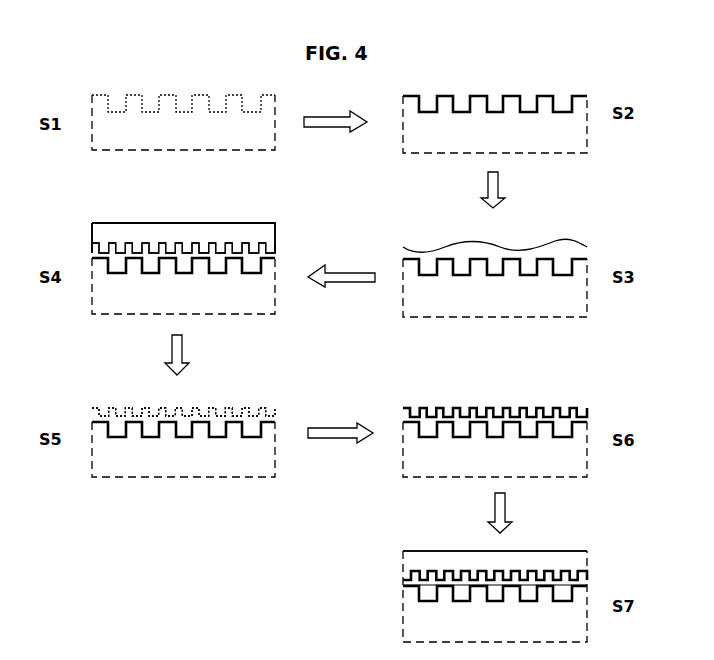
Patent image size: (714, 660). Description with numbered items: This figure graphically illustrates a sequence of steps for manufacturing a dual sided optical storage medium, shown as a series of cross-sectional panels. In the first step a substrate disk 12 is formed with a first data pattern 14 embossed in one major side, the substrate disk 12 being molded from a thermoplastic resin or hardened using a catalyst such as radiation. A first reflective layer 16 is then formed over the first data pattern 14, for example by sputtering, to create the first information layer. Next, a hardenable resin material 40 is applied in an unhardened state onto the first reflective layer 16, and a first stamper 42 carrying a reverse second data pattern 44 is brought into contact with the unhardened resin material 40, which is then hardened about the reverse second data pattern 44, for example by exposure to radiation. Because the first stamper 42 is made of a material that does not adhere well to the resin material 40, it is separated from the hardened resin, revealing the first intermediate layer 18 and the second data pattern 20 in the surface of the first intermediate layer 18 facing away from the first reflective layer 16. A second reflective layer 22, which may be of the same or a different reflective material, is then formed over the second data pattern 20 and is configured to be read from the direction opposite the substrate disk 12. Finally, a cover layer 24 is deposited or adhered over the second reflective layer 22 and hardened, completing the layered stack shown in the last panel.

The substrate disk 12 is at (192, 138).
The first data pattern 14 is at (168, 89).
The first reflective layer 16 is at (587, 95).
The first intermediate layer 18 is at (275, 415).
The second data pattern 20 is at (198, 405).
The second reflective layer 22 is at (587, 418).
The cover layer 24 is at (538, 562).
The hardenable resin material 40 is at (545, 250).
The first stamper 42 is at (168, 235).
The reverse second data pattern 44 is at (117, 240).